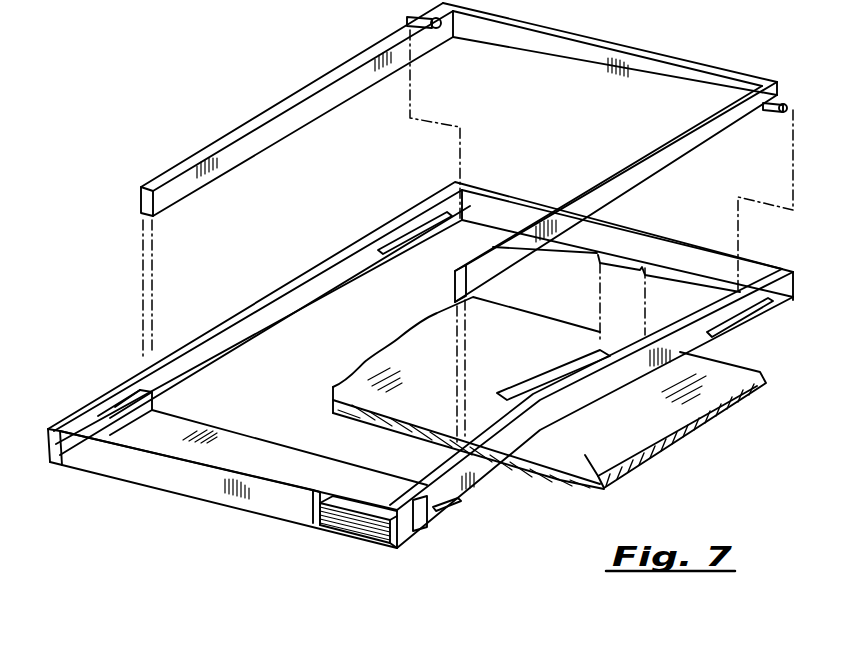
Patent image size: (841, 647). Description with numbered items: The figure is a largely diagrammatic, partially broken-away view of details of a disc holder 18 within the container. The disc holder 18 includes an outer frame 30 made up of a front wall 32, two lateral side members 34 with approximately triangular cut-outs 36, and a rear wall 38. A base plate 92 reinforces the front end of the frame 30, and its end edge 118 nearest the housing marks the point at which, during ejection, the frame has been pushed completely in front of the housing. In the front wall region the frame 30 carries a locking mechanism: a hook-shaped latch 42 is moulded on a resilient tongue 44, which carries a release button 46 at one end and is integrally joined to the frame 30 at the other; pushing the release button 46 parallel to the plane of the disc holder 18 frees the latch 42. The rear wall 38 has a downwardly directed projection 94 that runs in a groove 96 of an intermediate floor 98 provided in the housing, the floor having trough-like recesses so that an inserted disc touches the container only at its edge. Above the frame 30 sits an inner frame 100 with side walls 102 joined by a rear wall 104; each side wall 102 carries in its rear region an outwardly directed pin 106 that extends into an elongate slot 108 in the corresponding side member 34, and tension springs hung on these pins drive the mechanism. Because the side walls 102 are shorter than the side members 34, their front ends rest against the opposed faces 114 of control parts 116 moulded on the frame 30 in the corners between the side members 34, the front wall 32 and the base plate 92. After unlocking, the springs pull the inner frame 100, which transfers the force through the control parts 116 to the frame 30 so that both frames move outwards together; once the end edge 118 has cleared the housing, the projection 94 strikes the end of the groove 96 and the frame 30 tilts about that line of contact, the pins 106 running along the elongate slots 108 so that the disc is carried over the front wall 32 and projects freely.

The disc holder 18 is at (426, 392).
The frame 30 is at (266, 306).
The front wall 32 is at (240, 506).
The lateral side member 34 is at (336, 276).
The cut-out 36 is at (277, 318).
The rear wall 38 is at (682, 255).
The hook-shaped latch 42 is at (425, 530).
The resilient tongue 44 is at (448, 508).
The release button 46 is at (357, 527).
The base plate 92 is at (261, 444).
The projection 94 is at (624, 268).
The groove 96 is at (532, 368).
The intermediate floor 98 is at (365, 364).
The inner frame 100 is at (467, 224).
The side wall 102 is at (296, 113).
The rear wall 104 is at (553, 45).
The pin 106 is at (439, 30).
The elongate slot 108 is at (768, 305).
The opposed face 114 is at (155, 400).
The control part 116 is at (115, 406).
The end edge 118 is at (333, 451).